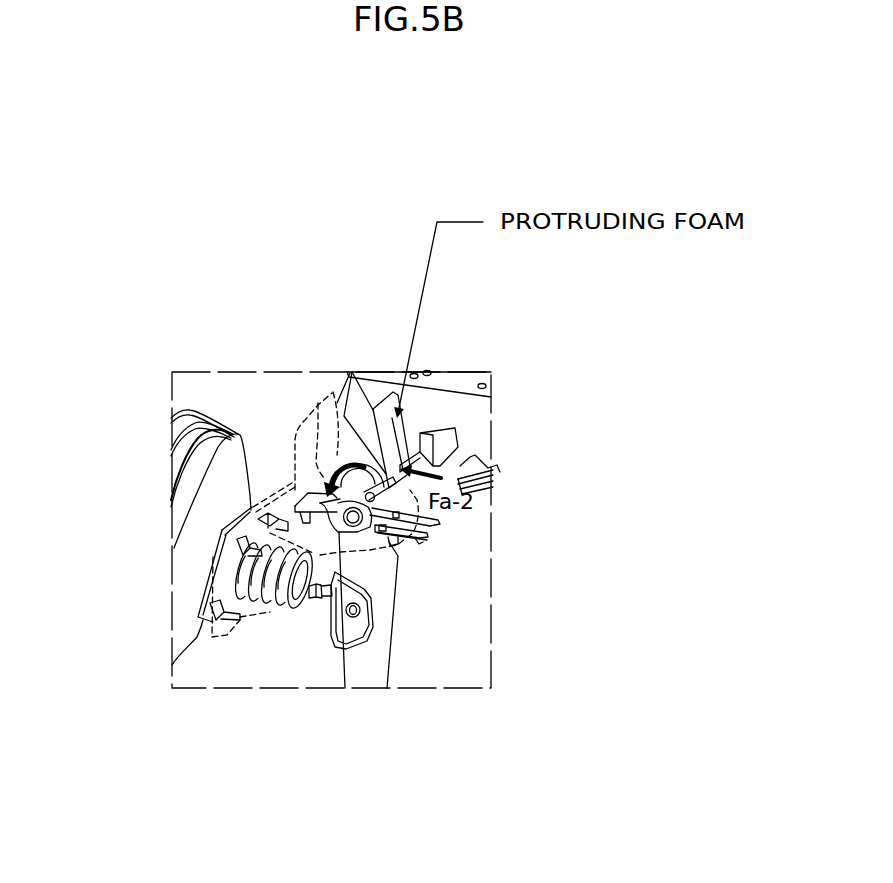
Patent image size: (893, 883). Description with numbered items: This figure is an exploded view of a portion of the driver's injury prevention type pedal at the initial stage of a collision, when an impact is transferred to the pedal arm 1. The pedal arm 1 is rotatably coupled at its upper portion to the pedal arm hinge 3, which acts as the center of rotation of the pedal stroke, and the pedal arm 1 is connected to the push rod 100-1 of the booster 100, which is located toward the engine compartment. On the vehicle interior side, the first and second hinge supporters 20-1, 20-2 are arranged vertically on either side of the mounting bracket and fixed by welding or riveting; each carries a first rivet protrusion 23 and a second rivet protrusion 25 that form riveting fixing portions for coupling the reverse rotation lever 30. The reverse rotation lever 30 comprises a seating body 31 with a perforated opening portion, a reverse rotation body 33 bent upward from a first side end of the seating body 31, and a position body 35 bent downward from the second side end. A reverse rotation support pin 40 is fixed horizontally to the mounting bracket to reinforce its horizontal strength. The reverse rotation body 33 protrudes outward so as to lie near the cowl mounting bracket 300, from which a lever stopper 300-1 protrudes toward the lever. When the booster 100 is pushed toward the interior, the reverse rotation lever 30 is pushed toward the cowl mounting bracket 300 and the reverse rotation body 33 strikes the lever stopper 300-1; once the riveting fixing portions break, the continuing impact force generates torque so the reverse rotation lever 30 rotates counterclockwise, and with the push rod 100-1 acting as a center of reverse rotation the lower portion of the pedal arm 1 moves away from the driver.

The pedal arm 1 is at (378, 648).
The pedal arm hinge 3 is at (331, 630).
The first hinge supporter 20-1 is at (440, 522).
The second hinge supporter 20-2 is at (425, 537).
The first rivet protrusion 23 is at (423, 537).
The second rivet protrusion 25 is at (265, 608).
The reverse rotation lever 30 is at (305, 215).
The seating body 31 is at (345, 416).
The reverse rotation body 33 is at (392, 407).
The position body 35 is at (305, 515).
The reverse rotation support pin 40 is at (447, 472).
The booster 100 is at (187, 585).
The push rod 100-1 is at (322, 600).
The cowl mounting bracket 300 is at (430, 387).
The lever stopper 300-1 is at (440, 439).